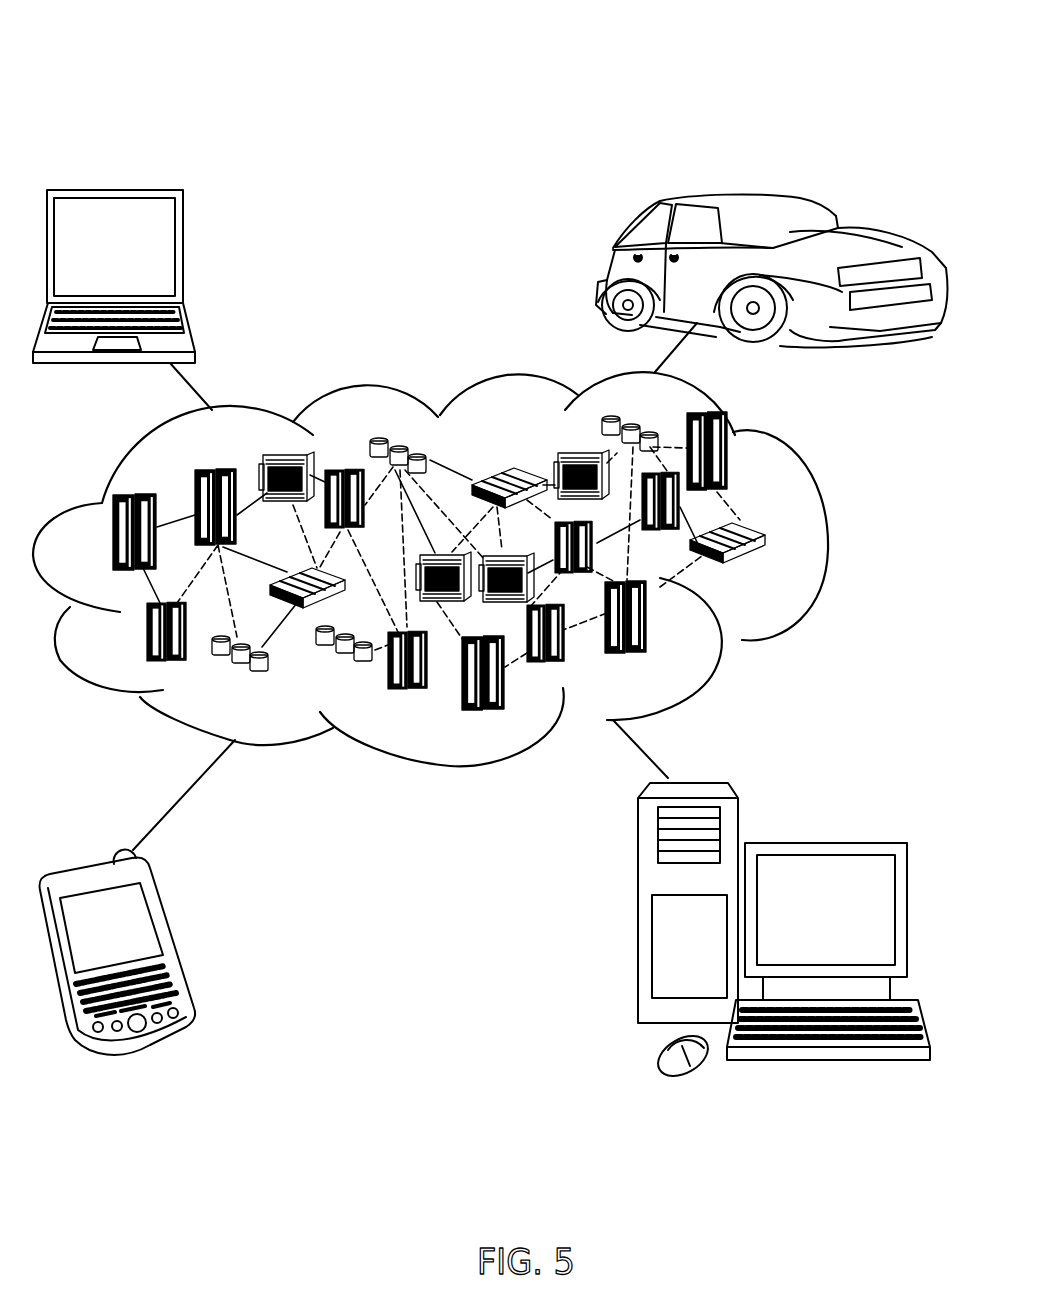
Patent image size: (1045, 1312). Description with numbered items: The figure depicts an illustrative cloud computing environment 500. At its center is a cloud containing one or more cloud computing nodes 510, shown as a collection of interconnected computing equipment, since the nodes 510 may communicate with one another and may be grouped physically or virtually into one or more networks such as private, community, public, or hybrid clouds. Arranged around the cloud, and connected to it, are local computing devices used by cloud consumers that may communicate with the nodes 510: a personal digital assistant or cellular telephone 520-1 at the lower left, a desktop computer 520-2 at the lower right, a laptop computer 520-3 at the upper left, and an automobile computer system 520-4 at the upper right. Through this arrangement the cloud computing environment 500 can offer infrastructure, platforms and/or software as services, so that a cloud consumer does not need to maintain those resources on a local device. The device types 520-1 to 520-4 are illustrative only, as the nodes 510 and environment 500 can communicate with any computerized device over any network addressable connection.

The cloud computing environment 500 is at (769, 46).
The cloud computing nodes 510 is at (776, 576).
The personal digital assistant or cellular telephone 520-1 is at (180, 946).
The desktop computer 520-2 is at (833, 818).
The laptop computer 520-3 is at (185, 255).
The automobile computer system 520-4 is at (607, 272).